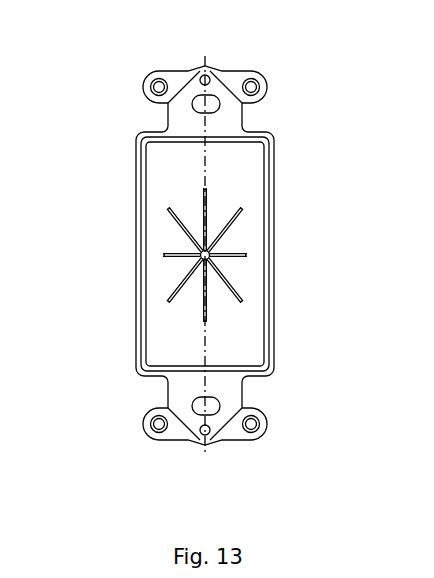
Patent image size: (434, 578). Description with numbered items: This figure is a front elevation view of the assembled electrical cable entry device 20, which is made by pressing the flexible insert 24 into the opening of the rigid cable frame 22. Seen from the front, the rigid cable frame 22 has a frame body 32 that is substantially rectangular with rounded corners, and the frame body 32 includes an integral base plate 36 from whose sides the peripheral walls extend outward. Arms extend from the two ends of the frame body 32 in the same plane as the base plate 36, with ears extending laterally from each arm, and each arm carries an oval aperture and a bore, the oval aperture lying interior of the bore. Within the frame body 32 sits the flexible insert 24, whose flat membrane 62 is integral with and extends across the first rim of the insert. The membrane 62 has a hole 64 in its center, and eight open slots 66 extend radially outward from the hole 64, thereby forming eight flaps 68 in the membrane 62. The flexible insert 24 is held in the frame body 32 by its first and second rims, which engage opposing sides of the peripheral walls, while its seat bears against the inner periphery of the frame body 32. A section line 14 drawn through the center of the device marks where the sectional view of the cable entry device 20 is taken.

The section line 14- 14 is at (271, 38).
The electrical cable entry device 20 is at (99, 154).
The rigid cable frame 22 is at (267, 377).
The flexible insert 24 is at (160, 355).
The frame body 32 is at (273, 162).
The base plate 36 is at (270, 315).
The membrane 62 is at (205, 254).
The hole 64 is at (212, 258).
The open slots 66 is at (222, 232).
The flaps 68 is at (183, 268).